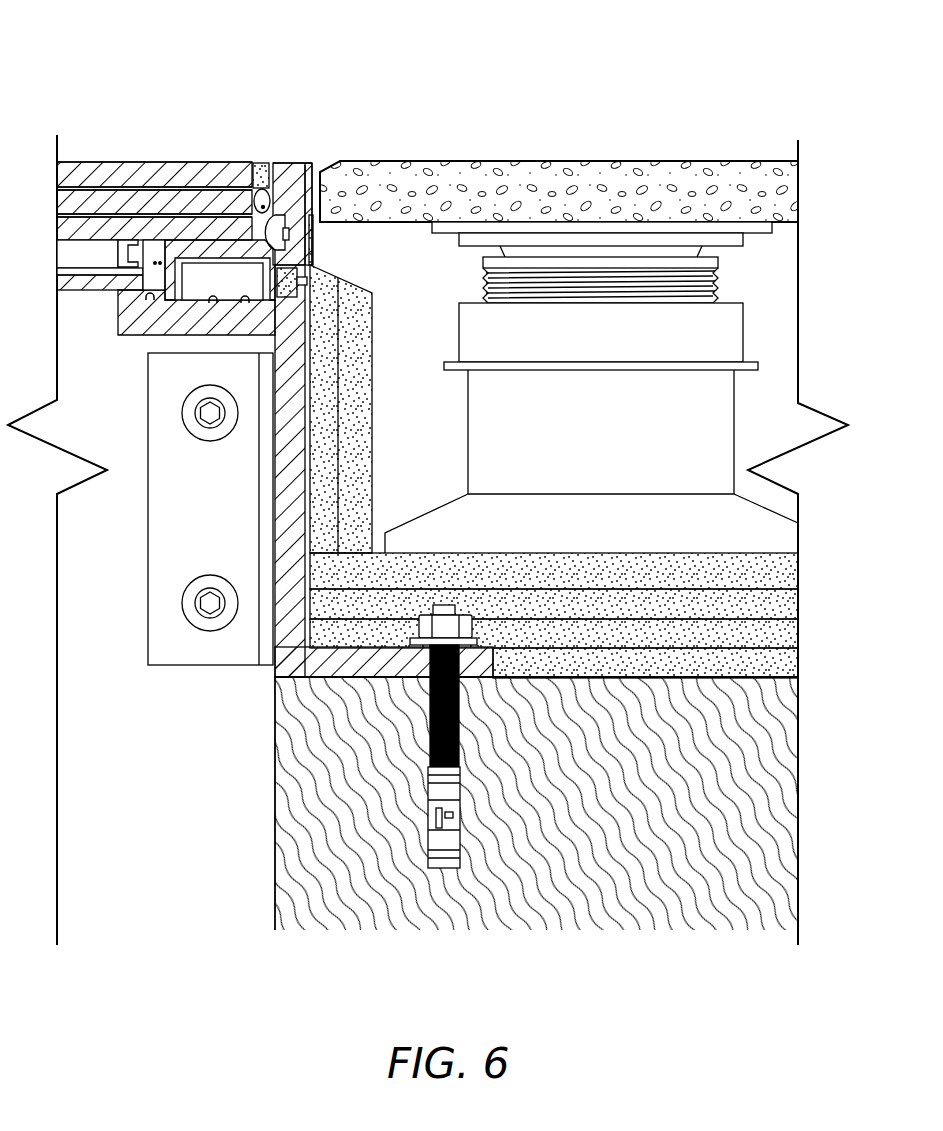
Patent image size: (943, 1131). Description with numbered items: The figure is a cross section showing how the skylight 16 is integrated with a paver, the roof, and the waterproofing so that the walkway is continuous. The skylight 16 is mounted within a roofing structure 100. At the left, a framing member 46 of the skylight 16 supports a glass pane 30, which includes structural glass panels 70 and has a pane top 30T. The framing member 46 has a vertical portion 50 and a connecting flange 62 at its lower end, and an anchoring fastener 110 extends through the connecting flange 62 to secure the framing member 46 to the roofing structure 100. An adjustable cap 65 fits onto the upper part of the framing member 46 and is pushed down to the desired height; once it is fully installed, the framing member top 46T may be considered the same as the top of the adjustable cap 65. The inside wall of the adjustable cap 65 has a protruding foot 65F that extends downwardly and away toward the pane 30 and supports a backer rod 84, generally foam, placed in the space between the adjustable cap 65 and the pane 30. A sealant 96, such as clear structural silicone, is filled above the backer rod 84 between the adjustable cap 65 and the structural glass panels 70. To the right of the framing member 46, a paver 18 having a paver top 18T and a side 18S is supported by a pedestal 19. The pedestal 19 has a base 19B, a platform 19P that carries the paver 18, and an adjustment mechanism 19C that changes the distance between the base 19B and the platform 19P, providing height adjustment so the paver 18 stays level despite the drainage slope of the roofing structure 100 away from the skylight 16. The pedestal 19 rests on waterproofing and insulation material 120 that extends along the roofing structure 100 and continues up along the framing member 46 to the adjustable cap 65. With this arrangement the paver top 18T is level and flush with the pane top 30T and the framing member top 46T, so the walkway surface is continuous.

The skylight 16 is at (99, 60).
The paver 18 is at (438, 161).
The paver top 18T is at (575, 161).
The side surface of slab 18S is at (320, 192).
The pedestal 19 is at (735, 430).
The platform 19P is at (772, 234).
The adjustment mechanism 19C is at (718, 285).
The base 19B is at (775, 528).
The pane 30 is at (118, 162).
The pane top 30T is at (195, 162).
The framing member 46 is at (273, 403).
The framing member top 46T is at (300, 162).
The vertical portion 50 is at (273, 558).
The connecting flange 62 is at (313, 680).
The adjustable cap 65 is at (273, 163).
The protruding foot 65F is at (272, 240).
The structural glass panels 70 is at (57, 230).
The backer rod 84 is at (258, 162).
The sealant 96 is at (271, 162).
The roofing structure 100 is at (795, 813).
The anchoring fastener 110 is at (428, 760).
The waterproofing and insulation material 120 is at (358, 290).